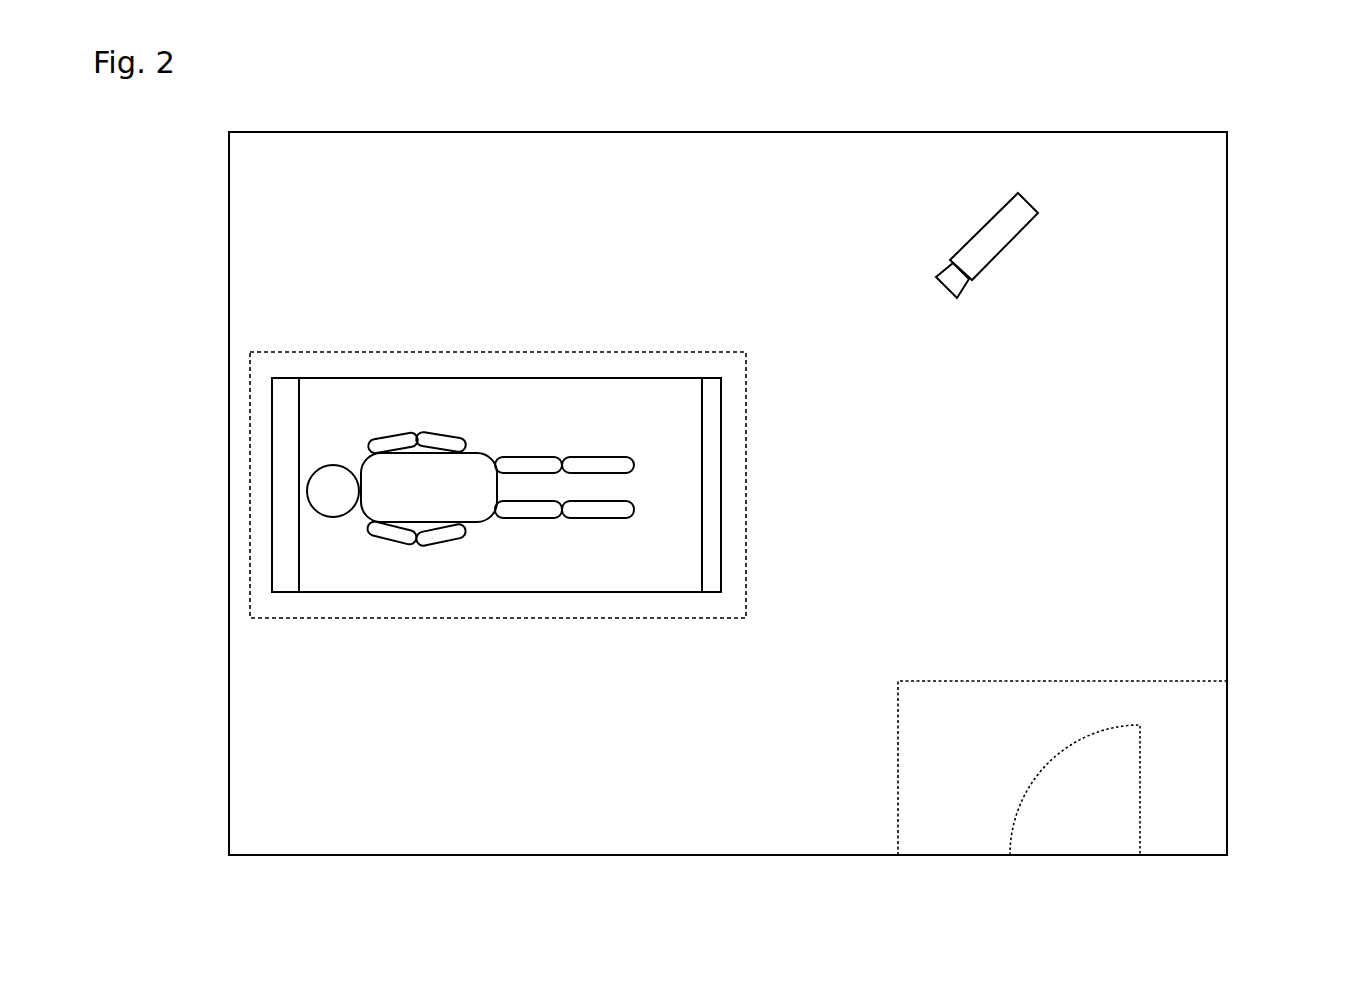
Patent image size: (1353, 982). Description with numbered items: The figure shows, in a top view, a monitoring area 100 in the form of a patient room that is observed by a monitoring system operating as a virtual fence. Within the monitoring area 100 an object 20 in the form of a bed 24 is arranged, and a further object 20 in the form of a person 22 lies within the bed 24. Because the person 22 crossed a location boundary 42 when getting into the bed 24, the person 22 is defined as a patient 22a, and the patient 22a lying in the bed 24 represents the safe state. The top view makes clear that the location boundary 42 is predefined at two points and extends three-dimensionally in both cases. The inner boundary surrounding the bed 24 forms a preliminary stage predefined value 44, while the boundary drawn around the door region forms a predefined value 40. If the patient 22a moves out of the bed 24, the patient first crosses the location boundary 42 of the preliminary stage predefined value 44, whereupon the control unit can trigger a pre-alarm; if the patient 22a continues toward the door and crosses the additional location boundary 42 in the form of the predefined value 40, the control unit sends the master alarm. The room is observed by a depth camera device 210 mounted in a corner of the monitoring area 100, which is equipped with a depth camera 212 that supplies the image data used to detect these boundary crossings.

The monitoring area 100 is at (1227, 390).
The object 20 is at (468, 490).
The person 22 is at (422, 453).
The patient 22a is at (467, 450).
The bed 24 is at (478, 593).
The preliminary stage predefined value 44 is at (612, 618).
The location boundary 42 is at (700, 618).
The predefined value 40 is at (1028, 681).
The depth camera device 210 is at (1061, 237).
The depth camera 212 is at (988, 253).